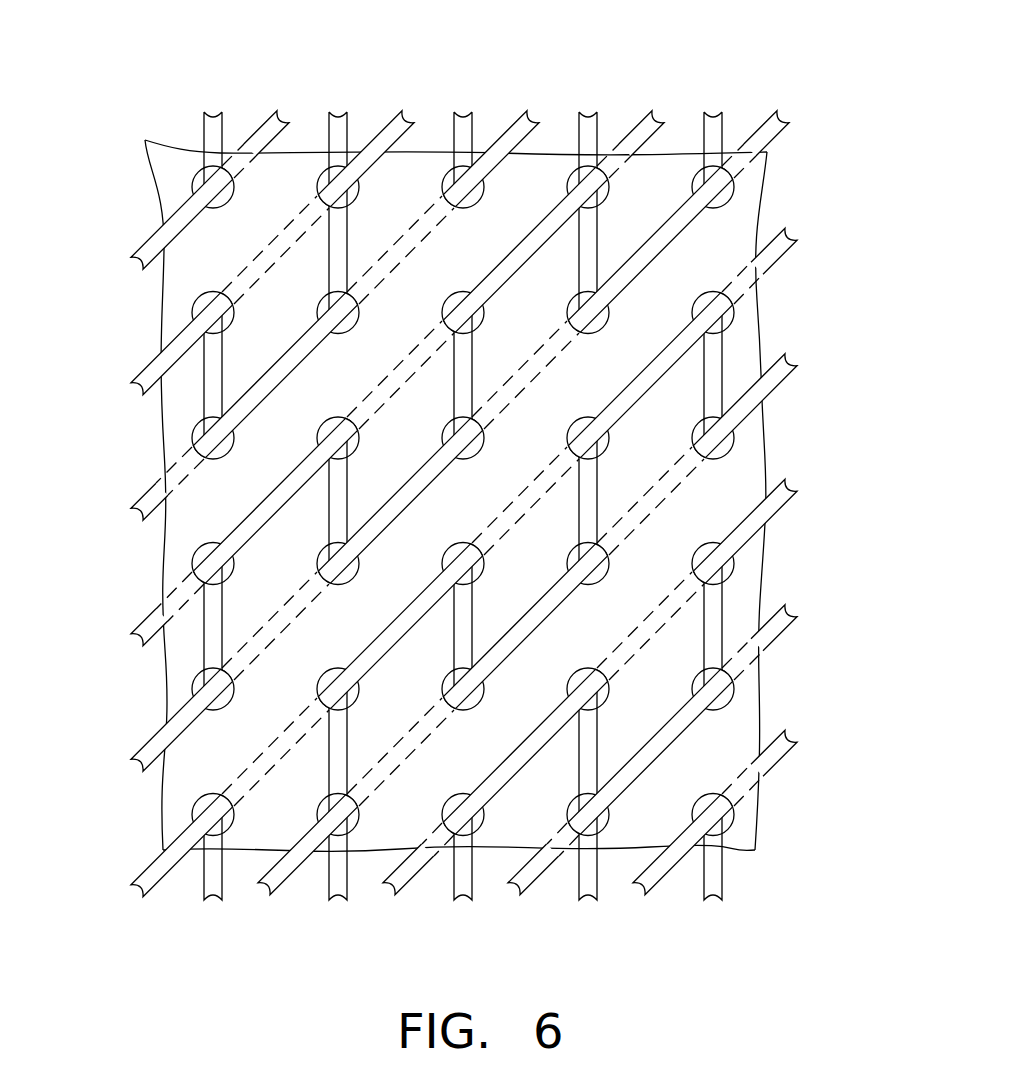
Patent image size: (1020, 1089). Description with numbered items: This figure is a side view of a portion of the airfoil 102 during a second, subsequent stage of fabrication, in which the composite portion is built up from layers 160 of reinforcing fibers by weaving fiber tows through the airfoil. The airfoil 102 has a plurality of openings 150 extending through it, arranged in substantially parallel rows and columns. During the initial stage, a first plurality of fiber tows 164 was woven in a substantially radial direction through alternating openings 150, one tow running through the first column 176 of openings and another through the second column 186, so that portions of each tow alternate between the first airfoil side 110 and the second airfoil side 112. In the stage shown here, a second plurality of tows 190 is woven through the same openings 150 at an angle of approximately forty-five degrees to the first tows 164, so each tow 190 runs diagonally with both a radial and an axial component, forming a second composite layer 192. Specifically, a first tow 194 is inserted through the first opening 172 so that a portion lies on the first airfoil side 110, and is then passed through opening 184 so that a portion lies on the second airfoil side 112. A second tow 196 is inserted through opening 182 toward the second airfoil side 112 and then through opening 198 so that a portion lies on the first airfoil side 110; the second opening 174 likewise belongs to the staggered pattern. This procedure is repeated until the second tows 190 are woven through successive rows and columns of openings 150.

The airfoil 102 is at (742, 223).
The first airfoil side 110 is at (170, 672).
The second airfoil side 112 is at (747, 455).
The openings 150 is at (193, 180).
The layers 160 is at (753, 324).
The fiber tows 164 is at (214, 116).
The first opening 172 is at (200, 800).
The second opening 174 is at (227, 693).
The first column 176 is at (235, 39).
The first opening 182 is at (354, 820).
The second opening 184 is at (357, 693).
The second column 186 is at (358, 39).
The second plurality of tows 190 is at (140, 378).
The second composite layer 192 is at (798, 100).
The first tow 194 is at (164, 883).
The second tow 196 is at (262, 893).
The opening 198 is at (484, 694).